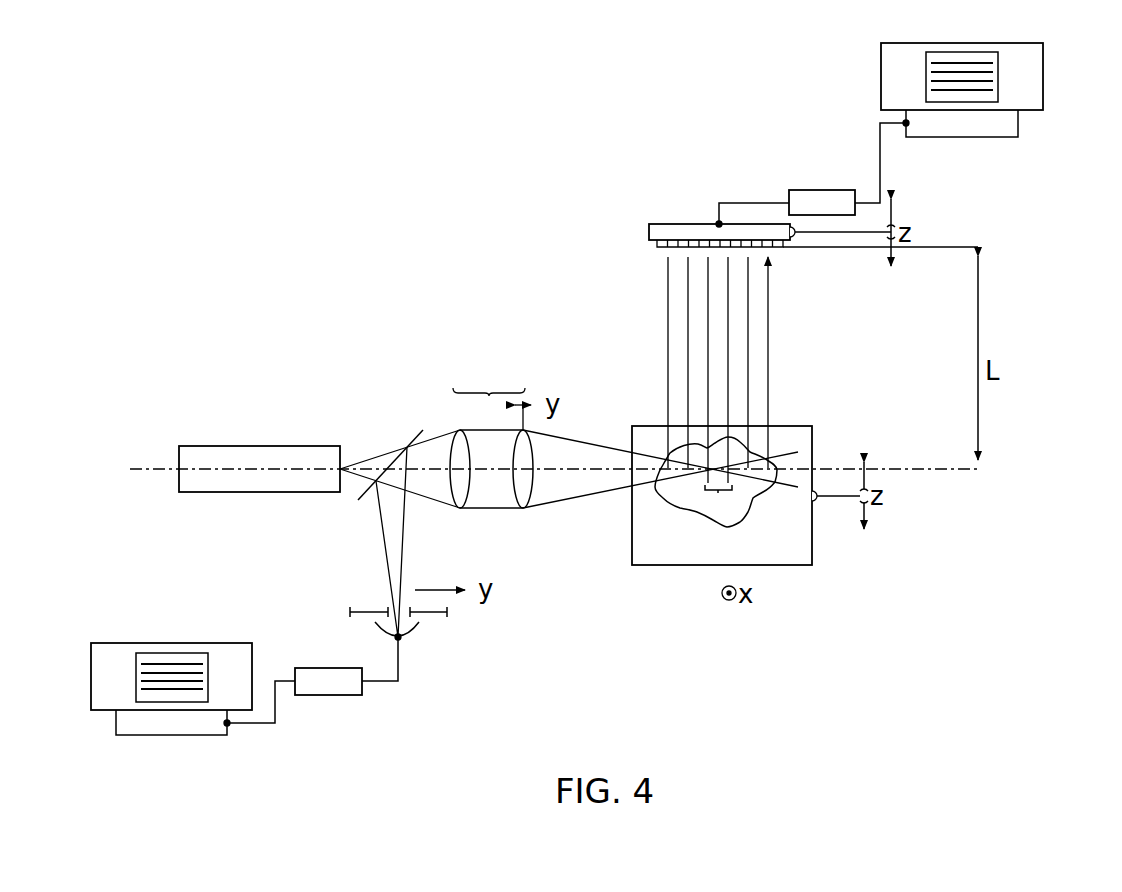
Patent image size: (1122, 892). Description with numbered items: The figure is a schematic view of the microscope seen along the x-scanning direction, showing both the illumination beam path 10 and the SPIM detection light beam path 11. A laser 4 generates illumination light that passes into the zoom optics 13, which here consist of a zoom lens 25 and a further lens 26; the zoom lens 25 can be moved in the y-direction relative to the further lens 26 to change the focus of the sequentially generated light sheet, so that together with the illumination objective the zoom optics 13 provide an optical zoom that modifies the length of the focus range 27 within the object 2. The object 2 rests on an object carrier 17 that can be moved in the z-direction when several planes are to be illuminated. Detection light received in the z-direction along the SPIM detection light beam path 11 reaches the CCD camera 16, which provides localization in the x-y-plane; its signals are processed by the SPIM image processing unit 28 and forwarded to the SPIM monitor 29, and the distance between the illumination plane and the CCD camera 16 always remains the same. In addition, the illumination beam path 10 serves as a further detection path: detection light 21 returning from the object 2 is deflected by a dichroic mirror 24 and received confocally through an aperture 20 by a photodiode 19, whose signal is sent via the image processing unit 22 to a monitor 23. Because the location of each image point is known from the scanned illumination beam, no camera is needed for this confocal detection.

The object 2 is at (743, 513).
The laser 4 is at (258, 446).
The illumination beam path 10 is at (419, 410).
The SPIM detection light beam path 11 is at (597, 268).
The zoom optics 13 is at (489, 390).
The CCD camera 16 is at (668, 232).
The object carrier 17 is at (803, 553).
The photodiode 19 is at (418, 628).
The aperture 20 is at (397, 595).
The detection light 21 is at (403, 545).
The image processing unit 22 is at (327, 688).
The monitor 23 is at (112, 652).
The dichroic mirror 24 is at (413, 441).
The zoom lens 25 is at (526, 497).
The further lens 26 is at (464, 497).
The focus range 27 is at (718, 492).
The SPIM image processing unit 28 is at (826, 200).
The SPIM monitor 29 is at (1045, 78).